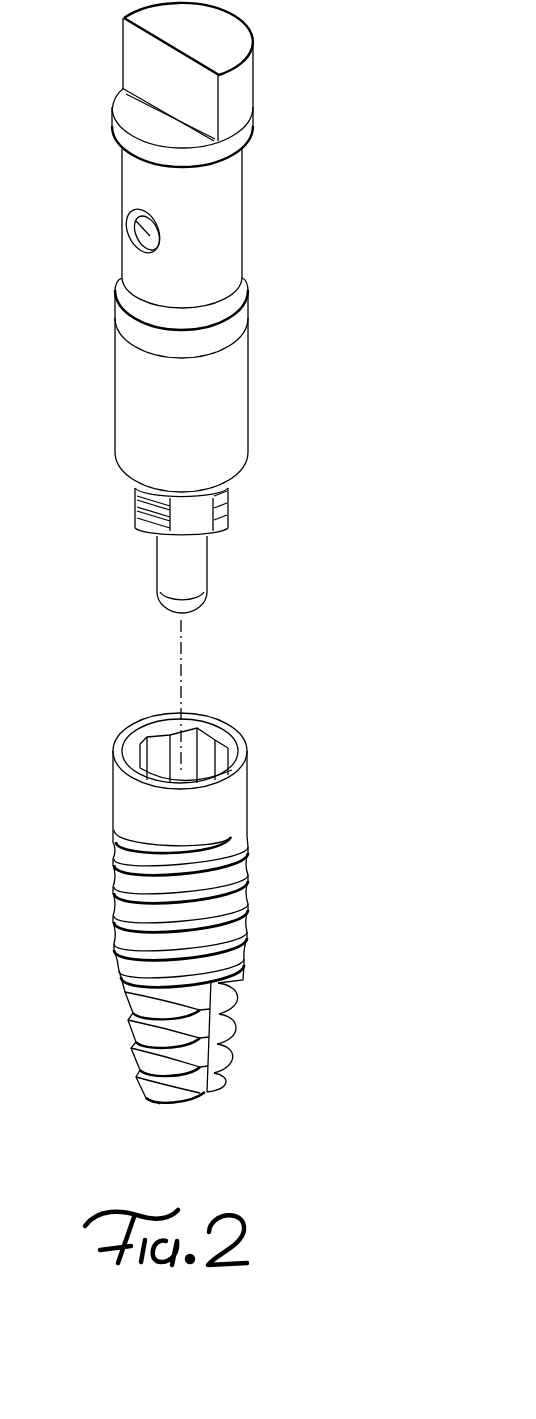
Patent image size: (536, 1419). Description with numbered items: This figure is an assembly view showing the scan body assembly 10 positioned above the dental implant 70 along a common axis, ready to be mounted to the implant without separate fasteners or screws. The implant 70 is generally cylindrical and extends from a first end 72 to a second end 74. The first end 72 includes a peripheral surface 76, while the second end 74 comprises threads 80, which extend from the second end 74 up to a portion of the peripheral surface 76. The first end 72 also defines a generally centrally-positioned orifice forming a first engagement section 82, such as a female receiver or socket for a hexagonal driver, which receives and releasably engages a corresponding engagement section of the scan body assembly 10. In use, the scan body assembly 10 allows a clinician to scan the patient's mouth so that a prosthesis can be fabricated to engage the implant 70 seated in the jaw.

The scan body assembly 10 is at (292, 190).
The dental implant 70 is at (212, 936).
The first end 72 is at (206, 689).
The second end 74 is at (170, 1118).
The peripheral surface 76 is at (136, 802).
The threads 80 is at (259, 910).
The first engagement section 82 is at (204, 763).